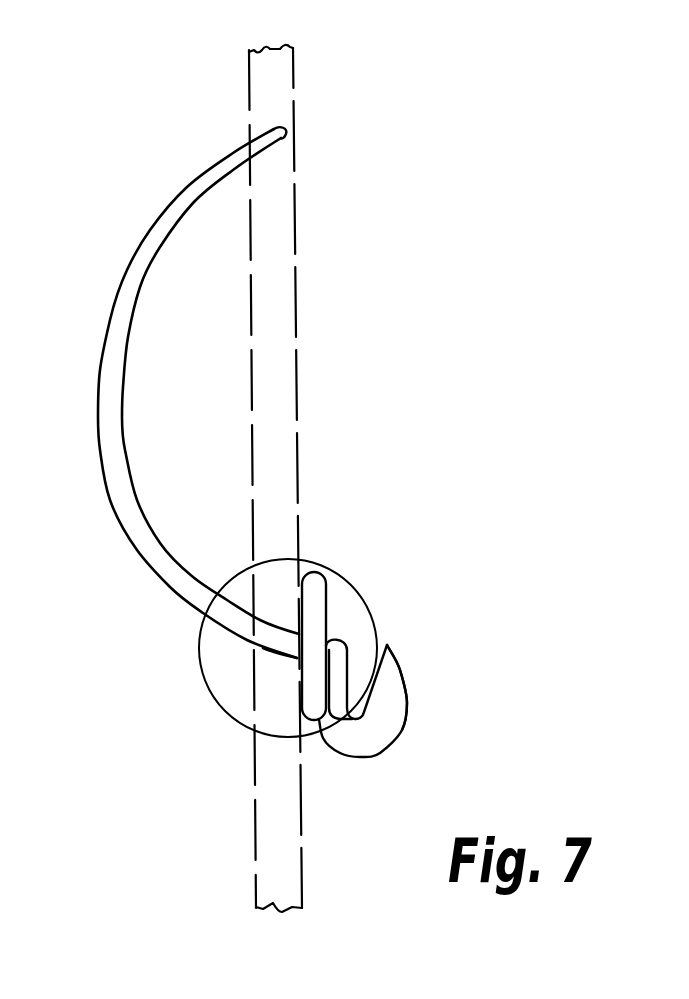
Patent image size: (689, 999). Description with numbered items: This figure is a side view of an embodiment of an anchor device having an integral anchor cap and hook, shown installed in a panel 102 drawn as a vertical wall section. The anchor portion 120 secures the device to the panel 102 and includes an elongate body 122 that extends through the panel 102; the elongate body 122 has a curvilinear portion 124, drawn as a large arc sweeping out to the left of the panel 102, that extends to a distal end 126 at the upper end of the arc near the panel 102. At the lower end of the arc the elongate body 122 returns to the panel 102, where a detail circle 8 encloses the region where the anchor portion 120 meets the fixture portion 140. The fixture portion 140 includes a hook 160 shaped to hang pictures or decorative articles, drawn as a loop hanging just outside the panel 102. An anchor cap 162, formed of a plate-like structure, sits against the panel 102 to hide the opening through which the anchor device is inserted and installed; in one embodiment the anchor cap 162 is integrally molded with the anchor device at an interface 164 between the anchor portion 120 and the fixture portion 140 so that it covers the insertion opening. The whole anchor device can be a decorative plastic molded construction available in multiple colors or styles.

The panel 102 is at (268, 50).
The anchor portion 120 is at (132, 237).
The elongate body 122 is at (98, 387).
The curvilinear portion 124 is at (126, 416).
The distal end 126 is at (281, 123).
The detail circle 8 is at (316, 558).
The anchor cap 162 is at (313, 592).
The interface 164 is at (297, 650).
The hook 160 is at (372, 737).
The fixture portion 140 is at (413, 697).